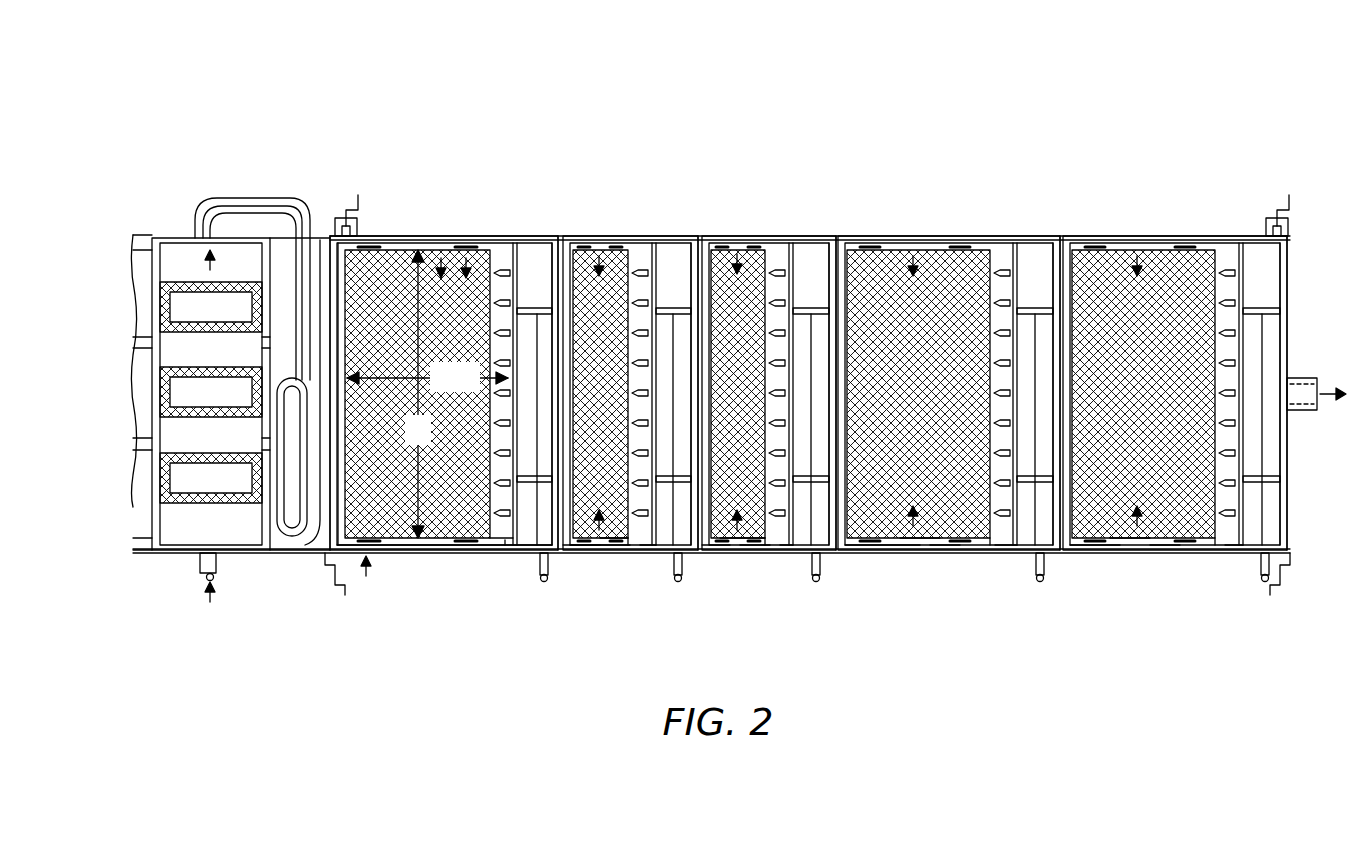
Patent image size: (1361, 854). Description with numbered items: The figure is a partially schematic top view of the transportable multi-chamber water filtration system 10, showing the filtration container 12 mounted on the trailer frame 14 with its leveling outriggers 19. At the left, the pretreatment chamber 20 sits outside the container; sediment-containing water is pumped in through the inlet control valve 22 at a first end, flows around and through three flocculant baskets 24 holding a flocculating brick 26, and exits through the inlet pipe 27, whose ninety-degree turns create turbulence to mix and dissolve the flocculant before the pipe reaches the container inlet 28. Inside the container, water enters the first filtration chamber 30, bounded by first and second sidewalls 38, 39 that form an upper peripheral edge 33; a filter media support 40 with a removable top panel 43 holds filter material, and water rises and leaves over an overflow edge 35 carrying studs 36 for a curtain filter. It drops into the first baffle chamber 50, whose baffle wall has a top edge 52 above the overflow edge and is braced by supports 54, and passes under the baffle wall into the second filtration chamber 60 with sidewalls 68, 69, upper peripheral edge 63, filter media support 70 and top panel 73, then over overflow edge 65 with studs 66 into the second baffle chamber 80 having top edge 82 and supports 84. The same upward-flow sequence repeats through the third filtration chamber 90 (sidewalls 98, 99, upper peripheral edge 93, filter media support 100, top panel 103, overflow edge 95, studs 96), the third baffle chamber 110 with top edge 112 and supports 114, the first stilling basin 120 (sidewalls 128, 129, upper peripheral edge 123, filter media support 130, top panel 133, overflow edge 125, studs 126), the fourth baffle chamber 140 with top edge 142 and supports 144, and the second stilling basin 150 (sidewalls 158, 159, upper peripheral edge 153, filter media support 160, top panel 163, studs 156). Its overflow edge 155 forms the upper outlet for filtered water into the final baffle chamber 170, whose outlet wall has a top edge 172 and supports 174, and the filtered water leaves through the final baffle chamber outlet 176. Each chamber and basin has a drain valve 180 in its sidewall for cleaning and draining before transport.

The multi-chamber water filtration system 10 is at (462, 106).
The filtration container 12 is at (366, 576).
The trailer frame 14 is at (288, 553).
The leveling outriggers 19 is at (345, 234).
The pretreatment chamber 20 is at (165, 238).
The inlet control valve 22 is at (188, 565).
The flocculant baskets 24 is at (191, 283).
The flocculating brick 26 is at (208, 480).
The inlet pipe 27 is at (250, 215).
The container inlet 28 is at (305, 520).
The first filtration chamber 30 is at (441, 258).
The upper peripheral edge 33 is at (330, 268).
The overflow edge 35 is at (510, 553).
The studs 36 is at (500, 553).
The first sidewall 38 is at (400, 240).
The second sidewall 39 is at (430, 553).
The filter media support 40 is at (466, 258).
The top panel 43 is at (375, 553).
The first baffle chamber 50 is at (539, 256).
The top edge 52 is at (556, 268).
The supports 54 is at (548, 553).
The second filtration chamber 60 is at (599, 256).
The upper peripheral edge 63 is at (568, 246).
The overflow edge 65 is at (648, 553).
The studs 66 is at (628, 553).
The first sidewall 68 is at (625, 240).
The second sidewall 69 is at (612, 553).
The filter media support 70 is at (598, 553).
The top panel 73 is at (582, 553).
The second baffle chamber 80 is at (665, 238).
The top edge 82 is at (672, 256).
The supports 84 is at (688, 553).
The third filtration chamber 90 is at (737, 254).
The upper peripheral edge 93 is at (716, 240).
The overflow edge 95 is at (790, 553).
The studs 96 is at (775, 553).
The first sidewall 98 is at (760, 238).
The second sidewall 99 is at (735, 553).
The filter media support 100 is at (760, 553).
The top panel 103 is at (718, 553).
The third baffle chamber 110 is at (812, 256).
The top edge 112 is at (830, 270).
The supports 114 is at (825, 553).
The first stilling basin 120 is at (913, 256).
The upper peripheral edge 123 is at (970, 240).
The overflow edge 125 is at (1000, 553).
The studs 126 is at (990, 553).
The first sidewall 128 is at (865, 240).
The second sidewall 129 is at (918, 553).
The filter media support 130 is at (893, 553).
The top panel 133 is at (945, 553).
The fourth baffle chamber 140 is at (1022, 268).
The top edge 142 is at (1036, 256).
The supports 144 is at (1050, 553).
The second stilling basin 150 is at (1137, 256).
The upper peripheral edge 153 is at (1185, 240).
The overflow edge 155 is at (1240, 553).
The studs 156 is at (1222, 553).
The first sidewall 158 is at (1095, 240).
The second sidewall 159 is at (1160, 553).
The filter media support 160 is at (1130, 553).
The top panel 163 is at (1110, 553).
The final baffle chamber 170 is at (1262, 256).
The top edge 172 is at (1283, 520).
The supports 174 is at (1268, 305).
The final baffle chamber outlet 176 is at (1300, 378).
The drain valve 180 is at (544, 582).